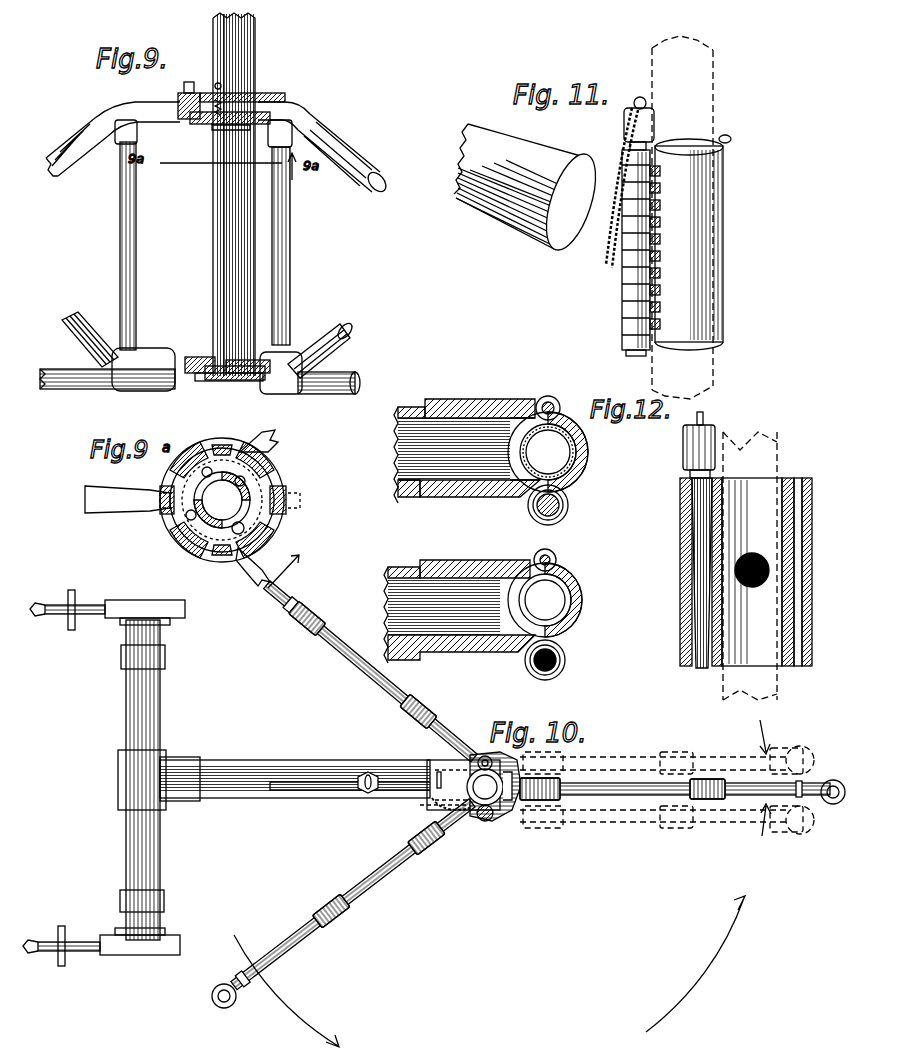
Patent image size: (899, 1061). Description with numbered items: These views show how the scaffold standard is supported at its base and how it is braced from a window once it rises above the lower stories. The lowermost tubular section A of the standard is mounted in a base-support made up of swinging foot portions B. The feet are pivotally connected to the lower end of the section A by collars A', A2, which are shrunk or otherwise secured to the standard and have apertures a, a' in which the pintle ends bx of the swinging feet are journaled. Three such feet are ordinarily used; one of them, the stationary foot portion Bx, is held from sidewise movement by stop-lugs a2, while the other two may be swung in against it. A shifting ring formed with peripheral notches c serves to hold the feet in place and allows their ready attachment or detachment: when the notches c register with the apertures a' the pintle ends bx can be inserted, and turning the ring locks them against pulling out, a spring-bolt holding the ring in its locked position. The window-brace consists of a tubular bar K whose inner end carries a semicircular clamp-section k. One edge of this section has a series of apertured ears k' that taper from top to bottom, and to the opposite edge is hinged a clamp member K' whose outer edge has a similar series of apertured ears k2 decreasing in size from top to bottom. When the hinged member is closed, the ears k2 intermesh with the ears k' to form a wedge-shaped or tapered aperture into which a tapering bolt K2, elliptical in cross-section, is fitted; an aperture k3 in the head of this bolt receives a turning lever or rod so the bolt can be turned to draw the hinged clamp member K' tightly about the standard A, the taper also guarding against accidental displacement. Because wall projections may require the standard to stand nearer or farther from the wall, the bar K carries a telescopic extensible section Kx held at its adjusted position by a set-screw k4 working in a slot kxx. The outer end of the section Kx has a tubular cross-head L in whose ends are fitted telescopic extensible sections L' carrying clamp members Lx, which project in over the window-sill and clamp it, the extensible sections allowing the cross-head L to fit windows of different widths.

In FIG. 9, the lower section A is at (215, 194).
In FIG. 9A, the lower section A is at (222, 500).
In FIG. 10, the lower section A is at (437, 826).
In FIG. 9, the collar A' is at (256, 88).
In FIG. 9, the collar A2 is at (214, 357).
In FIG. 9, the swinging foot portions B is at (326, 362).
In FIG. 10, the swinging foot portions B is at (628, 798).
In FIG. 9, the stationary foot portion Bx is at (134, 234).
In FIG. 9, the pintle ends bx is at (172, 101).
In FIG. 9A, the pintle ends bx is at (236, 452).
In FIG. 9A, the aperture a is at (234, 500).
In FIG. 10, the aperture a is at (503, 823).
In FIG. 9A, the aperture a' is at (215, 501).
In FIG. 9, the stop-lugs a2 is at (184, 121).
In FIG. 9A, the stop-lugs a2 is at (290, 530).
In FIG. 9, the peripheral notches c is at (201, 120).
In FIG. 9A, the peripheral notches c is at (258, 468).
In FIG. 11, the tubular bar K is at (529, 193).
In FIG. 12, the tubular bar K is at (462, 531).
In FIG. 10, the tubular bar K is at (446, 796).
In FIG. 11, the hinged clamp member K' is at (693, 242).
In FIG. 12, the hinged clamp member K' is at (565, 524).
In FIG. 10, the hinged clamp member K' is at (504, 808).
In FIG. 12, the tapering bolt K2 is at (700, 505).
In FIG. 10, the telescopic extensible section Kx is at (295, 793).
In FIG. 11, the semicircular clamp-section k is at (652, 223).
In FIG. 12, the semicircular clamp-section k is at (621, 538).
In FIG. 10, the semicircular clamp-section k is at (459, 758).
In FIG. 12, the apertured ears k' is at (603, 588).
In FIG. 11, the apertured ears k2 is at (662, 182).
In FIG. 12, the apertured ears k2 is at (568, 505).
In FIG. 10, the apertured ears k2 is at (482, 822).
In FIG. 11, the aperture k3 is at (622, 122).
In FIG. 10, the set-screw k4 is at (372, 772).
In FIG. 10, the slot kxx is at (318, 790).
In FIG. 10, the tubular cross-head L is at (128, 780).
In FIG. 10, the collars L' is at (141, 775).
In FIG. 10, the clamp members Lx is at (104, 776).